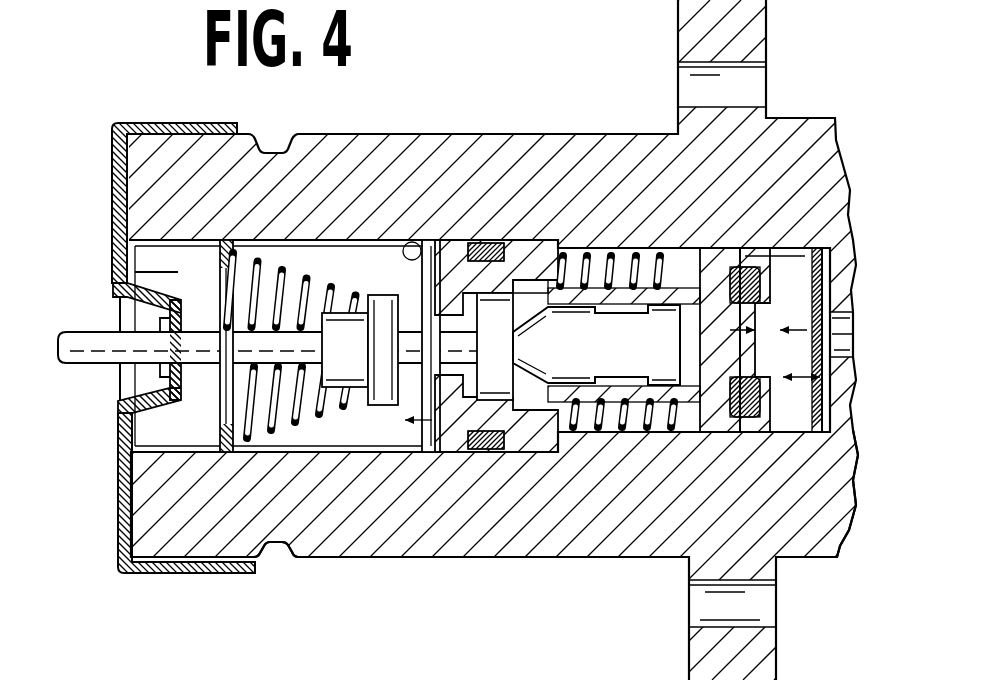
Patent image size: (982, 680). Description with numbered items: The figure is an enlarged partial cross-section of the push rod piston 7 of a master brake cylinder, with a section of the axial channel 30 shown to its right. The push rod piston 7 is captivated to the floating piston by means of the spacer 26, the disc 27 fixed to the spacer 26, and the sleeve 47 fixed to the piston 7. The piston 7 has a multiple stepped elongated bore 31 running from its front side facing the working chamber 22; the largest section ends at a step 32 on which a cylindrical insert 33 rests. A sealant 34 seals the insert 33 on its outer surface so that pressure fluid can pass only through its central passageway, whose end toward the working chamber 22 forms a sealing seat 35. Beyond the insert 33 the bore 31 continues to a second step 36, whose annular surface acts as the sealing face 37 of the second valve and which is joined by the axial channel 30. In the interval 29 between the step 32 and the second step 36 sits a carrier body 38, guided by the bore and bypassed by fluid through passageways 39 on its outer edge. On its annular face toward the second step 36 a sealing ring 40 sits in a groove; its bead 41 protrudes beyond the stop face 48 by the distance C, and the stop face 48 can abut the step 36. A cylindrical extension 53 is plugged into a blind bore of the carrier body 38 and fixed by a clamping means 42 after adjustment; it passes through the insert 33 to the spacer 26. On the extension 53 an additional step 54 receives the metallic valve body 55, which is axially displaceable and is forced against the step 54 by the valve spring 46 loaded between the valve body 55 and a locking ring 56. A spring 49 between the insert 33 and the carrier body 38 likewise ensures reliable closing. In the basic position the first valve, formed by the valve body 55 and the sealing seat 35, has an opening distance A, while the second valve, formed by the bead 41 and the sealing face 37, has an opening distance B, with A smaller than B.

The push rod piston 7 is at (342, 157).
The working chamber 22 is at (338, 425).
The spacer 26 is at (95, 338).
The disc 27 is at (172, 278).
The interval 29 is at (658, 432).
The axial channel 30 is at (845, 340).
The elongated bore 31 is at (418, 242).
The step 32 is at (575, 288).
The insert 33 is at (537, 290).
The sealant 34 is at (492, 243).
The sealing seat 35 is at (448, 262).
The second step 36 is at (848, 214).
The sealing face 37 is at (848, 266).
The carrier body 38 is at (645, 268).
The passageways 39 is at (700, 236).
The sealing ring 40 is at (782, 558).
The bead 41 is at (841, 540).
The clamping means 42 is at (612, 432).
The valve spring 46 is at (240, 435).
The sleeve 47 is at (182, 123).
The stop face 48 is at (854, 480).
The spring 49 is at (582, 386).
The cylindrical extension 53 is at (443, 345).
The additional step 54 is at (385, 296).
The valve body 55 is at (383, 405).
The locking ring 56 is at (267, 543).
The opening distance A is at (432, 420).
The opening distance B is at (773, 377).
The distance C is at (773, 302).